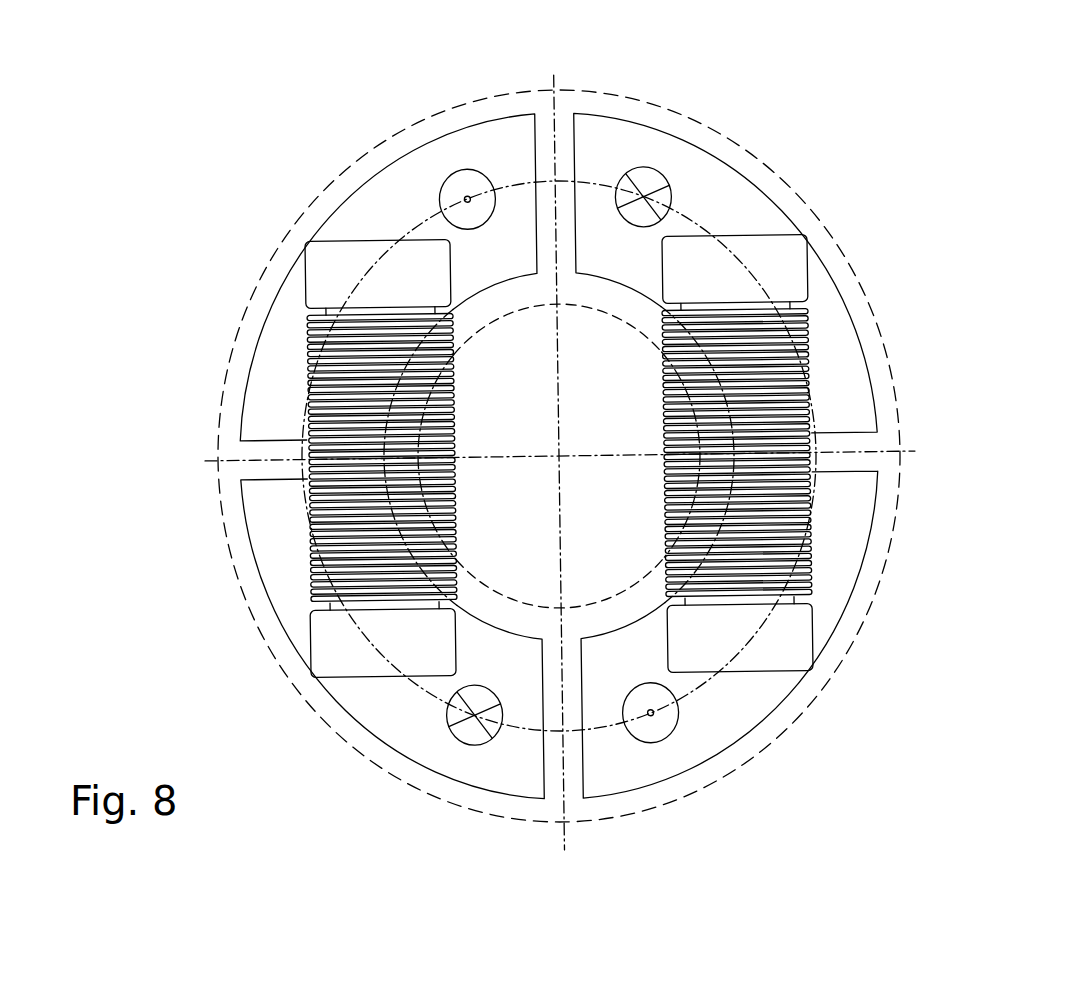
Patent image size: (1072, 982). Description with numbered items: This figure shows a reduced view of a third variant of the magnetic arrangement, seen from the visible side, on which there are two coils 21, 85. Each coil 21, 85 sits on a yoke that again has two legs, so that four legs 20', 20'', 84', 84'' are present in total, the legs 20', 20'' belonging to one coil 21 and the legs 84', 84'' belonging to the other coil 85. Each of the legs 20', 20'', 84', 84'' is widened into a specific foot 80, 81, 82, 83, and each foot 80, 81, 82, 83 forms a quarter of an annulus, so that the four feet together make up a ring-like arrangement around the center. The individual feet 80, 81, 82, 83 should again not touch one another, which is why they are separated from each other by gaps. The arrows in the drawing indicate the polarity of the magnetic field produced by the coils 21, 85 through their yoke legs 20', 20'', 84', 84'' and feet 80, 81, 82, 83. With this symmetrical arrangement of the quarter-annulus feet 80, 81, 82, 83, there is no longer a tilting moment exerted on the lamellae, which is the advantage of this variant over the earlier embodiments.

The foot 80 is at (515, 157).
The foot 82 is at (617, 157).
The foot 81 is at (420, 732).
The foot 83 is at (708, 732).
The leg 20' is at (279, 213).
The leg 20'' is at (283, 579).
The leg 84'' is at (836, 214).
The leg 84' is at (837, 584).
The coil 21 is at (329, 397).
The coil 85 is at (765, 403).